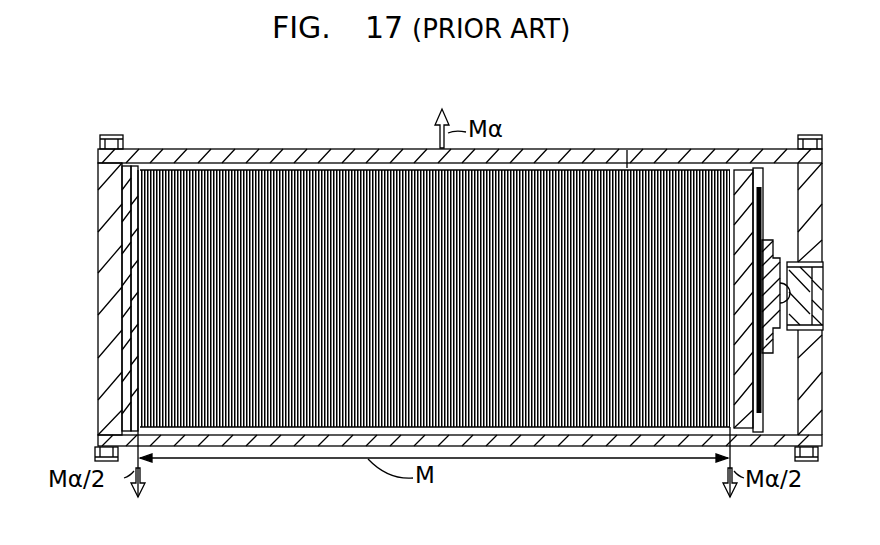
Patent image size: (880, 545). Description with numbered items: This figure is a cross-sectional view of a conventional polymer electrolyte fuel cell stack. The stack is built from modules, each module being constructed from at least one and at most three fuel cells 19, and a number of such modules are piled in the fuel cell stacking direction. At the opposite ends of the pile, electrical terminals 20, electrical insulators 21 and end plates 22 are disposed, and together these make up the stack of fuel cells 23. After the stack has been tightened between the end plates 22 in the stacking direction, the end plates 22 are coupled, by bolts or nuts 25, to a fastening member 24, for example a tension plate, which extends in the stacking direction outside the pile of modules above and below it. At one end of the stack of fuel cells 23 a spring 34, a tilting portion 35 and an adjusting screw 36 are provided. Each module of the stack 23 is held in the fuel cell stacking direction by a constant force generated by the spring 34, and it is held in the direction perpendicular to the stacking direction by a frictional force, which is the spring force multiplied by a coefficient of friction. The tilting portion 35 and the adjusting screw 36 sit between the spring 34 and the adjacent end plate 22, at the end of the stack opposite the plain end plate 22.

The fuel cell 19 is at (330, 181).
The electrical terminal 20 is at (137, 188).
The electrical insulator 21 is at (129, 186).
The end plate 22 is at (112, 188).
The fuel cell stack 23 is at (628, 150).
The fastening member 24 is at (222, 152).
The bolts or nuts 25 is at (811, 136).
The spring 34 is at (781, 262).
The tilting portion 35 is at (789, 301).
The adjusting screw 36 is at (805, 330).